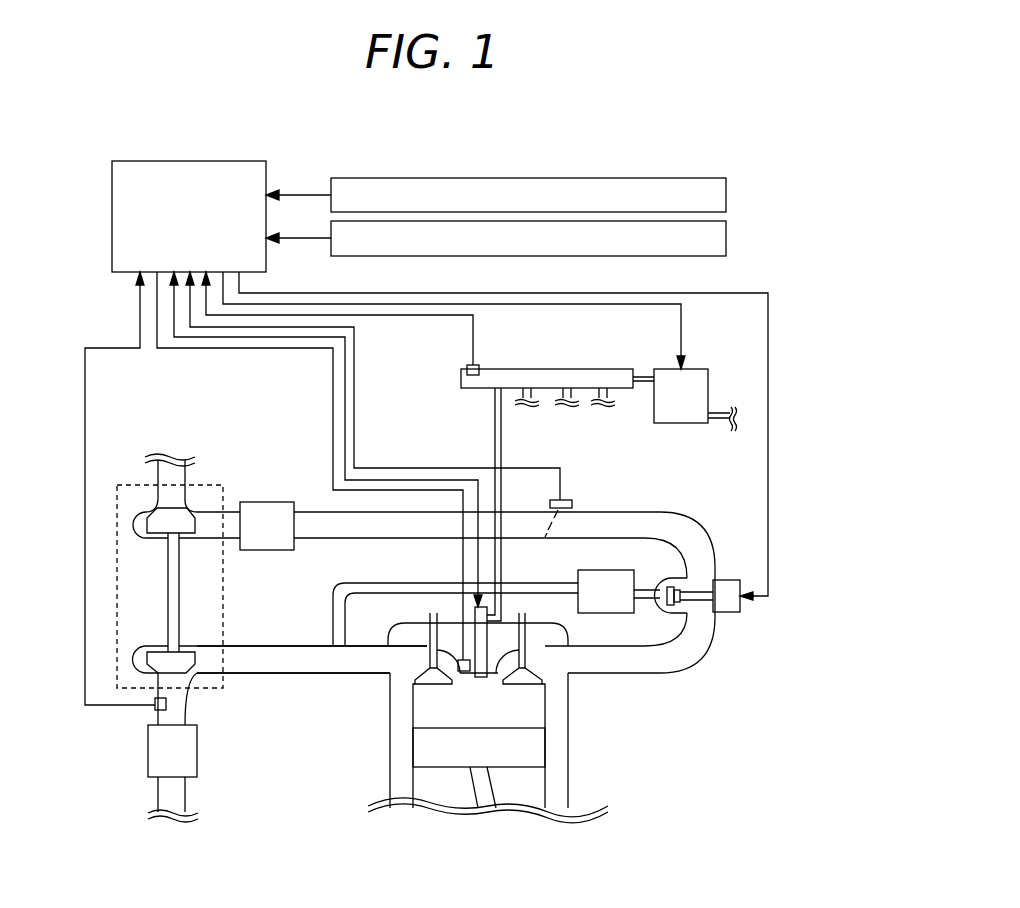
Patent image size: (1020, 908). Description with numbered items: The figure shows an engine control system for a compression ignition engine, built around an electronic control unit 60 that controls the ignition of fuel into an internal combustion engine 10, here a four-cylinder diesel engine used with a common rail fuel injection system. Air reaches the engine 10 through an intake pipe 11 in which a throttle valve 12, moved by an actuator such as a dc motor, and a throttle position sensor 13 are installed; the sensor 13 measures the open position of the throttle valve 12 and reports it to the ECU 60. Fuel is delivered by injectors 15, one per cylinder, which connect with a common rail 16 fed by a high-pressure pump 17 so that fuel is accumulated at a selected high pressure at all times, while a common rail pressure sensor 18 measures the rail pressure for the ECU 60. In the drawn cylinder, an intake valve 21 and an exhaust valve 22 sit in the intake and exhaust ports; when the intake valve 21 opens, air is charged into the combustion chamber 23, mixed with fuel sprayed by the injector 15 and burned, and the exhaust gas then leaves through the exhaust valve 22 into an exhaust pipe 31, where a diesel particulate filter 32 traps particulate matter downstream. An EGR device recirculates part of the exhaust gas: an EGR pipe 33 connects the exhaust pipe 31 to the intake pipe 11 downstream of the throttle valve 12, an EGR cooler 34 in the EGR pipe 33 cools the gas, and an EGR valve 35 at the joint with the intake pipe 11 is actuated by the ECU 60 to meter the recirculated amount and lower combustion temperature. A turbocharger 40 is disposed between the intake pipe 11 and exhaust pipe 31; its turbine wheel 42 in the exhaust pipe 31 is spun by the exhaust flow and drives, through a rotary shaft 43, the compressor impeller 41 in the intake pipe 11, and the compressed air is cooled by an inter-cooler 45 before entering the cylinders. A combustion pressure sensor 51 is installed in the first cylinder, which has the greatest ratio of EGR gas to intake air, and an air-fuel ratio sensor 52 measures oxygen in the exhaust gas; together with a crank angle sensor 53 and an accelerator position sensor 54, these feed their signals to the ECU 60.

The internal combustion engine 10 is at (675, 812).
The intake pipe 11 is at (690, 515).
The throttle valve 12 is at (551, 535).
The throttle position sensor 13 is at (565, 500).
The injector 15 is at (484, 678).
The common rail 16 is at (620, 369).
The high-pressure pump 17 is at (690, 369).
The common rail pressure sensor 18 is at (479, 366).
The intake valve 21 is at (545, 682).
The exhaust valve 22 is at (418, 682).
The combustion chamber 23 is at (530, 737).
The exhaust pipe 31 is at (310, 674).
The diesel particulate filter 32 is at (148, 771).
The EGR pipe 33 is at (350, 583).
The EGR cooler 34 is at (620, 572).
The EGR valve 35 is at (735, 580).
The turbocharger 40 is at (117, 485).
The compressor impeller 41 is at (165, 535).
The turbine wheel 42 is at (160, 650).
The rotary shaft 43 is at (180, 590).
The inter-cooler 45 is at (282, 502).
The combustion pressure sensor 51 is at (464, 672).
The air-fuel ratio sensor 52 is at (155, 705).
The crank angle sensor 53 is at (726, 194).
The accelerator position sensor 54 is at (726, 237).
The electronic control unit 60 is at (251, 161).